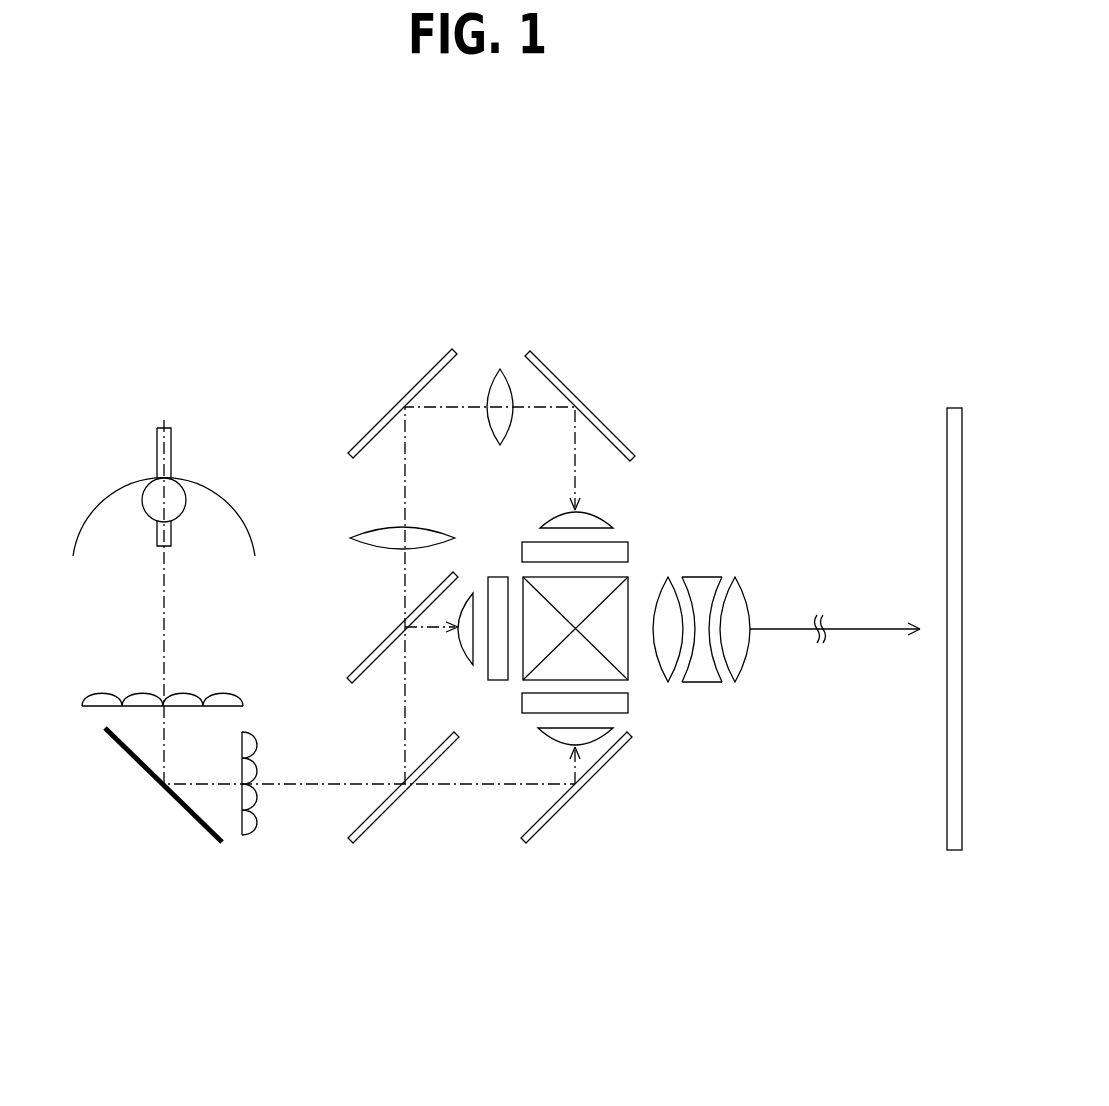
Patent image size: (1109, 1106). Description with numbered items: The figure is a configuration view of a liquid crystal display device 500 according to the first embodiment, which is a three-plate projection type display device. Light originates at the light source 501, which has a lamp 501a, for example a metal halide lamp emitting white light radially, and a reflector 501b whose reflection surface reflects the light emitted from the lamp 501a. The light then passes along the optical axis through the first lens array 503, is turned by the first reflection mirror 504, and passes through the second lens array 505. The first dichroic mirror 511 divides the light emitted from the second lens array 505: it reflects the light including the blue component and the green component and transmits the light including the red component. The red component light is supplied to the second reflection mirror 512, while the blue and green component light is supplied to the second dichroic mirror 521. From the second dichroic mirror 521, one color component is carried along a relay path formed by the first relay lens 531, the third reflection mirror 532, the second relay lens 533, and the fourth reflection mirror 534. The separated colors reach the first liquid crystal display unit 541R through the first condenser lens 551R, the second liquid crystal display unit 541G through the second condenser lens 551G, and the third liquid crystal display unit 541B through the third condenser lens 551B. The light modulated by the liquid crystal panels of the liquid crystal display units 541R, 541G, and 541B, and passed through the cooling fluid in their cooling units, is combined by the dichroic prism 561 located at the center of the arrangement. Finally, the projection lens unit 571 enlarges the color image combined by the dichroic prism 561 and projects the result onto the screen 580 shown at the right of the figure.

The liquid crystal display device 500 is at (713, 347).
The light source 501 is at (215, 447).
The lamp 501a is at (171, 546).
The reflector 501b is at (73, 556).
The first lens array 503 is at (95, 692).
The first reflection mirror 504 is at (167, 797).
The second lens array 505 is at (250, 838).
The first dichroic mirror 511 is at (388, 812).
The second reflection mirror 512 is at (557, 813).
The second dichroic mirror 521 is at (345, 668).
The first relay lens 531 is at (362, 535).
The third reflection mirror 532 is at (412, 387).
The second relay lens 533 is at (498, 370).
The fourth reflection mirror 534 is at (560, 370).
The third liquid crystal display unit 541B is at (623, 555).
The second liquid crystal display unit 541G is at (492, 663).
The first liquid crystal display unit 541R is at (620, 700).
The third condenser lens 551B is at (592, 520).
The second condenser lens 551G is at (465, 637).
The first condenser lens 551R is at (587, 735).
The dichroic prism 561 is at (532, 597).
The projection lens unit 571 is at (743, 568).
The screen 580 is at (947, 728).